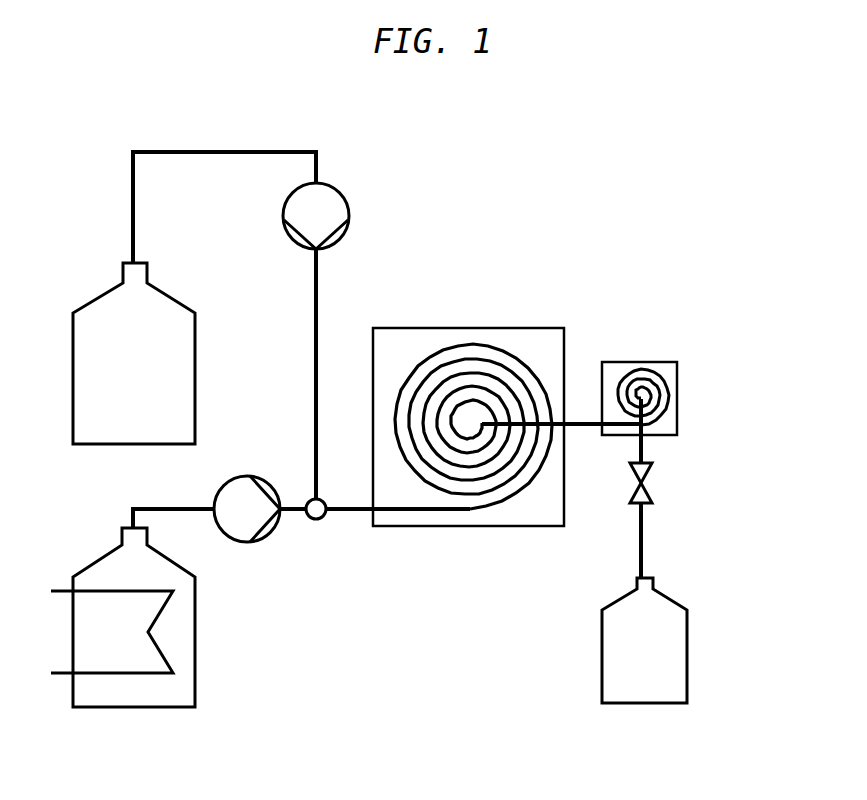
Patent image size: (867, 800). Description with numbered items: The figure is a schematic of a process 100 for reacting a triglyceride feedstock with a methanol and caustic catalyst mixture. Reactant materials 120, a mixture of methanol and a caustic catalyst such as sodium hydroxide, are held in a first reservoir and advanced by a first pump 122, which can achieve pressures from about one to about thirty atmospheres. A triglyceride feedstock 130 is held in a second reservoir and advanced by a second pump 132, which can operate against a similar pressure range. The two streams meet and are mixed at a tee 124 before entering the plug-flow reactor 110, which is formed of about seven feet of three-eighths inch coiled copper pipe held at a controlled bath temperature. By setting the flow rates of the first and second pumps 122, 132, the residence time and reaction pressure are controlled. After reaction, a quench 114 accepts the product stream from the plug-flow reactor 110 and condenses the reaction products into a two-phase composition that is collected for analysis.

The process 100 is at (713, 266).
The plug-flow reactor 110 is at (467, 341).
The quench 114 is at (668, 403).
The reactant materials 120 is at (173, 293).
The first pump 122 is at (340, 192).
The tee 124 is at (310, 521).
The triglyceride feedstock 130 is at (98, 557).
The second pump 132 is at (218, 490).